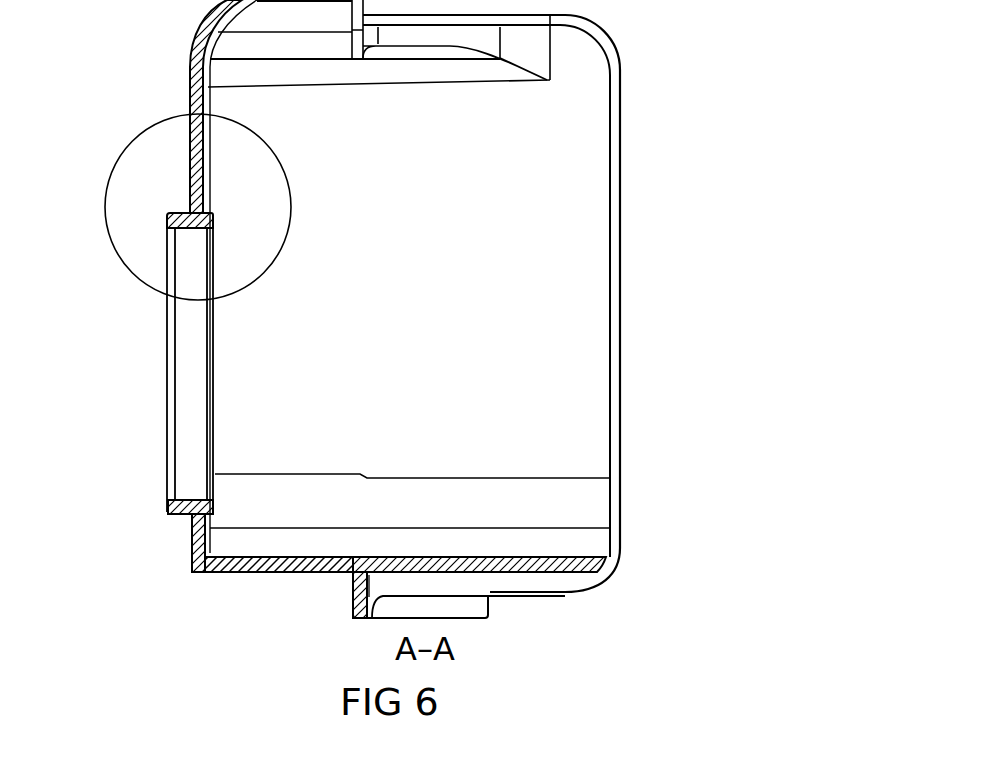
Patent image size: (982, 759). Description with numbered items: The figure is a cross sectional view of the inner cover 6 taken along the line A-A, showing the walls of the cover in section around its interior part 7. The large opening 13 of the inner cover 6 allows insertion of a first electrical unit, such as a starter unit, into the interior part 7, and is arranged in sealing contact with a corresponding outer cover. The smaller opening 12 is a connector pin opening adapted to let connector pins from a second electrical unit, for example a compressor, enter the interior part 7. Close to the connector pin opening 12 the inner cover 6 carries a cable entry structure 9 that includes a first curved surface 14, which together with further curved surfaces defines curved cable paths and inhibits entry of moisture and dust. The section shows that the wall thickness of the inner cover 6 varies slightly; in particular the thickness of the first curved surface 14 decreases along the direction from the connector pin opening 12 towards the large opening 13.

The inner cover 6 is at (657, 77).
The interior part 7 is at (530, 412).
The cable entry structure 9 is at (545, 607).
The smaller opening 12 is at (185, 398).
The large opening 13 is at (583, 217).
The first curved surface 14 is at (530, 557).